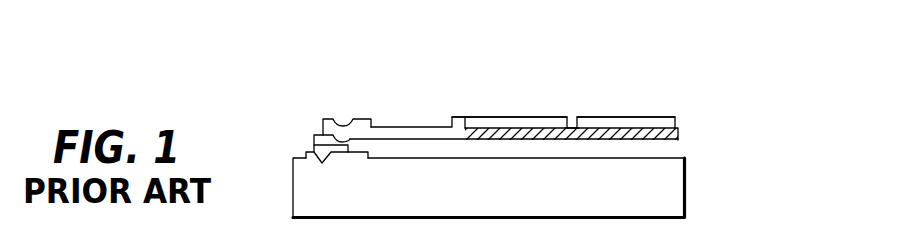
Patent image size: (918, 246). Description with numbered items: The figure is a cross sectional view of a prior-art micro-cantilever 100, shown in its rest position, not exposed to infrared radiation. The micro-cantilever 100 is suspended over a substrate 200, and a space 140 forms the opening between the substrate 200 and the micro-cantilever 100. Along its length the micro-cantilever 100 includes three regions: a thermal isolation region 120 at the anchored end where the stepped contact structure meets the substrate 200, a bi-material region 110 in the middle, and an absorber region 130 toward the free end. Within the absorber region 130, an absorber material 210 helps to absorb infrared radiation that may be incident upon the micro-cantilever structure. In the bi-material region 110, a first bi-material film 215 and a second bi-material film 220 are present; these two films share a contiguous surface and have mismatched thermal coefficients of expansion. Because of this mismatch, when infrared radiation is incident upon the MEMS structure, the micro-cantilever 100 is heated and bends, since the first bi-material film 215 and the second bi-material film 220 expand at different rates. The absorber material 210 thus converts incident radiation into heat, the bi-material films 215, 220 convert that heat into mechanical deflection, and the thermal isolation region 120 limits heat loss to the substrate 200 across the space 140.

The micro-cantilever 100 is at (576, 65).
The bi-material region 110 is at (509, 107).
The thermal isolation region 120 is at (399, 110).
The absorber region 130 is at (616, 107).
The space 140 is at (652, 148).
The substrate 200 is at (517, 202).
The absorber material 210 is at (664, 117).
The first bi-material film 215 is at (463, 117).
The second bi-material film 220 is at (678, 134).